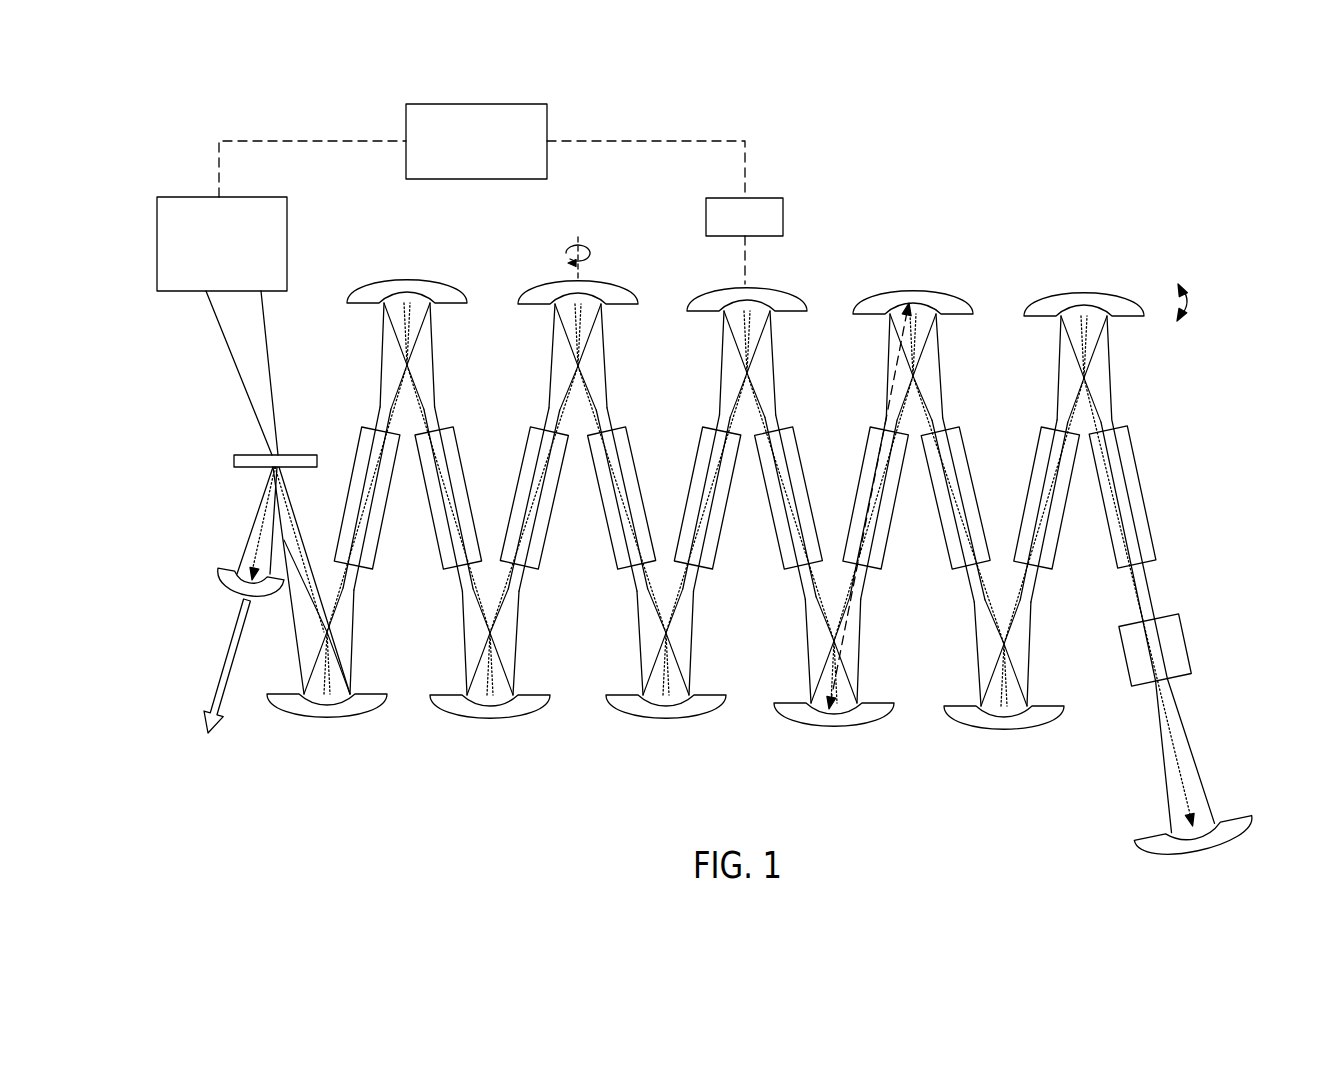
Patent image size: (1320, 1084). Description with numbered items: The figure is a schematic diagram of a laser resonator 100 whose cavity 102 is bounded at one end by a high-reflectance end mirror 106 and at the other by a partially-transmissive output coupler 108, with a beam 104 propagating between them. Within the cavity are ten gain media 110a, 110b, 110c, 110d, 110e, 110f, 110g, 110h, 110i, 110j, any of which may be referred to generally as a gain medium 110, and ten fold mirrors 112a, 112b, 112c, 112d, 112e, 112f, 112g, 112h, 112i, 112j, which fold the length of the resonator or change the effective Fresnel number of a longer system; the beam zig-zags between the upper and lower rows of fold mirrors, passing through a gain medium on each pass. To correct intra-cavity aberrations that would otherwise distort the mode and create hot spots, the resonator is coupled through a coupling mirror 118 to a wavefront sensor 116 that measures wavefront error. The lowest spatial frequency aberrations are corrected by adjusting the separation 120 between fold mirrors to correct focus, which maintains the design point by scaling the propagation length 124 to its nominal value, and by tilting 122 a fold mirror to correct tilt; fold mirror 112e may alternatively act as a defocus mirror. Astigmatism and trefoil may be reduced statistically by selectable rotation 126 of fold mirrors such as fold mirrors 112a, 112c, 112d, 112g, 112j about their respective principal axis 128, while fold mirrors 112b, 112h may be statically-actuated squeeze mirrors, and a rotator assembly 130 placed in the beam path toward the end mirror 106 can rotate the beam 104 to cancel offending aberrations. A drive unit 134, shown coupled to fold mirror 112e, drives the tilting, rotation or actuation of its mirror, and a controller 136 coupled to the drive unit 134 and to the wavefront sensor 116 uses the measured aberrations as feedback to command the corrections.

The laser resonator 100 is at (923, 195).
The cavity 102 is at (1134, 386).
The beam 104 is at (1188, 732).
The high-reflectance (HR) end mirror 106 is at (1207, 847).
The partially-transmissive output coupler (OC) 108 is at (228, 571).
The gain medium 110 is at (1148, 493).
The gain medium 110a is at (1137, 447).
The gain medium 110b is at (1050, 553).
The gain medium 110c is at (972, 450).
The gain medium 110d is at (880, 548).
The gain medium 110e is at (802, 450).
The gain medium 110f is at (712, 548).
The gain medium 110g is at (634, 450).
The gain medium 110h is at (540, 548).
The gain medium 110i is at (457, 450).
The gain medium 110j is at (375, 552).
The fold mirror 112a is at (1085, 290).
The fold mirror 112b is at (1008, 733).
The fold mirror 112c is at (913, 288).
The fold mirror 112d is at (835, 730).
The fold mirror 112e is at (737, 285).
The fold mirror 112f is at (667, 722).
The fold mirror 112g is at (550, 280).
The fold mirror 112h is at (495, 722).
The fold mirror 112i is at (407, 277).
The fold mirror 112j is at (327, 720).
The wavefront sensor 116 is at (193, 197).
The coupling mirror 118 is at (246, 453).
The separation 120 is at (897, 383).
The tilting 122 is at (1188, 293).
The propagation length 124 is at (1183, 783).
The rotation 126 is at (592, 252).
The principal axis 128 is at (578, 240).
The rotator assembly 130 is at (1185, 642).
The drive unit 134 is at (730, 198).
The controller 136 is at (442, 180).